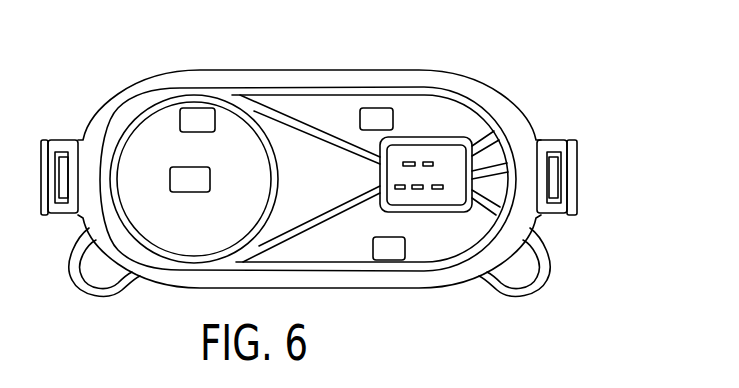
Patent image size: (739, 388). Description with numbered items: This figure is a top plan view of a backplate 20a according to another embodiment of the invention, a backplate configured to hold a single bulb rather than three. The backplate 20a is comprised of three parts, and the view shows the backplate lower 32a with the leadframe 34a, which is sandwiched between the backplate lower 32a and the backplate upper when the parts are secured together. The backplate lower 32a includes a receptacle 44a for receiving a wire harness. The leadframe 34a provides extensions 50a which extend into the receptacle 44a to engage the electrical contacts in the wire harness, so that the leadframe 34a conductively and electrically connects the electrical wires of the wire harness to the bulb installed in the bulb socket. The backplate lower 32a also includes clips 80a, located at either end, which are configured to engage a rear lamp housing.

The backplate 20a is at (355, 172).
The backplate lower 32a is at (339, 76).
The receptacle 44a is at (448, 212).
The extensions 50a is at (428, 161).
The leadframe 34a is at (421, 191).
The clips 80a is at (54, 130).